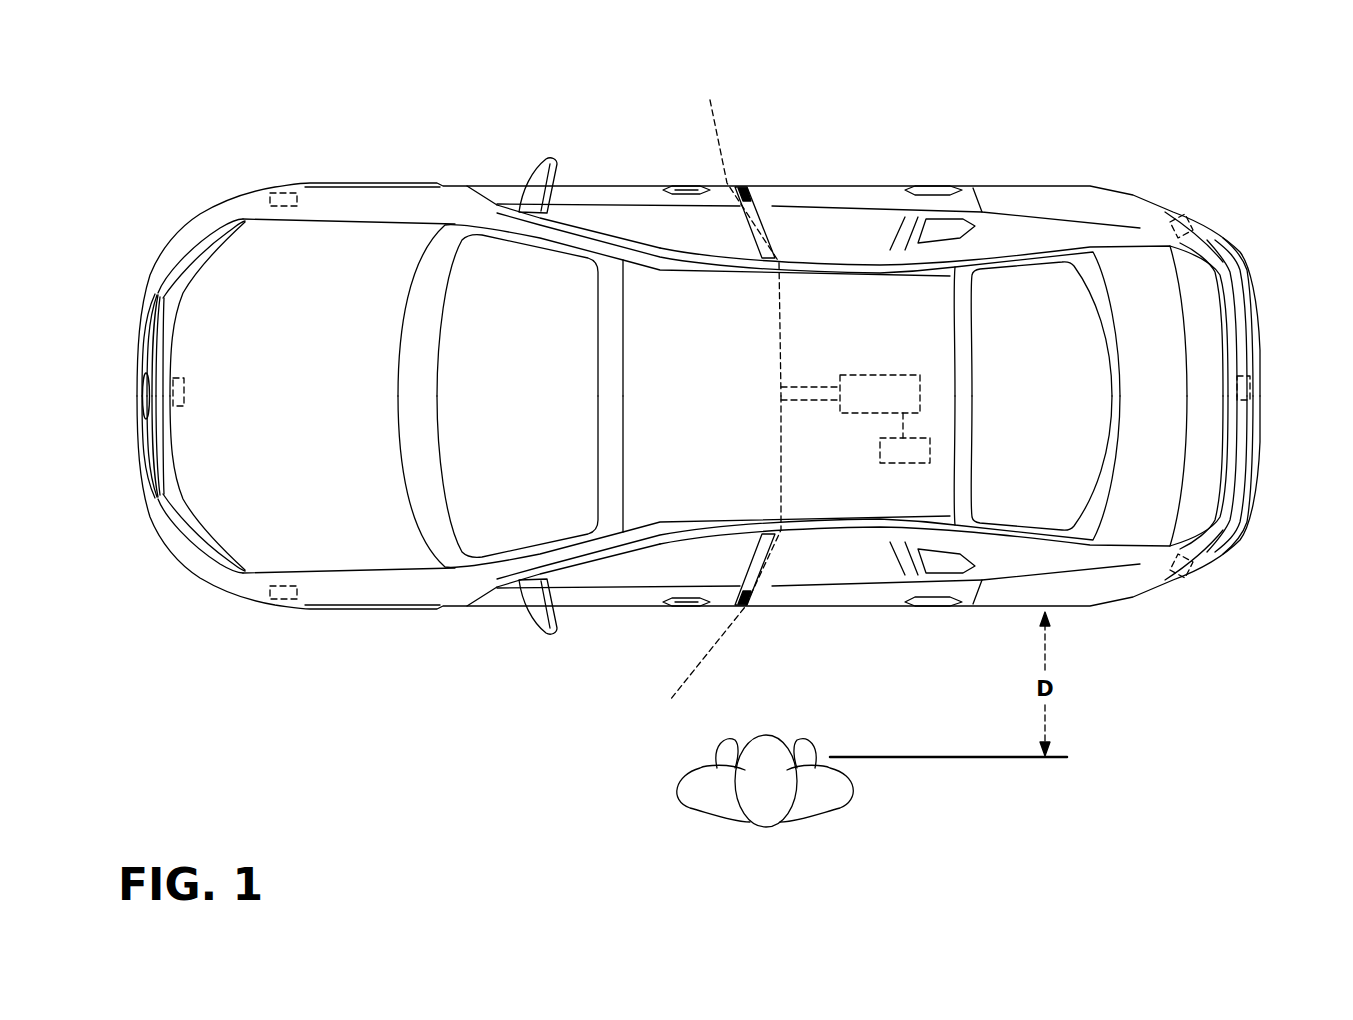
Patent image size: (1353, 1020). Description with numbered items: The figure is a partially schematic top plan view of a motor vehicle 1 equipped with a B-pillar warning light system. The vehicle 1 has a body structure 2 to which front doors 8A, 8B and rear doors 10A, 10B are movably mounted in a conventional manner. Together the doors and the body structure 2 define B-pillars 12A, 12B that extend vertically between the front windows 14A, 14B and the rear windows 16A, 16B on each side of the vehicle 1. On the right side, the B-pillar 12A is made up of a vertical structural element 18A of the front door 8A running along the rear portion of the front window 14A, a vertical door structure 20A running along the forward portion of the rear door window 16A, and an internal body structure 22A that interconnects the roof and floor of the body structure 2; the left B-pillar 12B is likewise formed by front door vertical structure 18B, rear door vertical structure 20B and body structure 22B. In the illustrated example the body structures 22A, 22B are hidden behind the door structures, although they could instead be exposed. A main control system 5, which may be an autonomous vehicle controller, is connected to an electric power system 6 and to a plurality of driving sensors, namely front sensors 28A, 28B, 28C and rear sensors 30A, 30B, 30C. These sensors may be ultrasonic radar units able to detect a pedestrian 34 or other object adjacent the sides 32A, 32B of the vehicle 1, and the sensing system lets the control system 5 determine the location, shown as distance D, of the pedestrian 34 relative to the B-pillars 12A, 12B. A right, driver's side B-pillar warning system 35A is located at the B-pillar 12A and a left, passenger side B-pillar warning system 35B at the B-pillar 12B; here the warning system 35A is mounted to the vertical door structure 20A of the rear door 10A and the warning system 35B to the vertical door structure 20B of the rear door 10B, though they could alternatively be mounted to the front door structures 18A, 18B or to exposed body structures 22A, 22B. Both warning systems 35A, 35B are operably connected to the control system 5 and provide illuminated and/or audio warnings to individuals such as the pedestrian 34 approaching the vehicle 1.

The motor vehicle 1 is at (1134, 190).
The body structure 2 is at (1093, 187).
The main control system 5 is at (868, 375).
The electric power system 6 is at (910, 465).
The front door 8A is at (597, 607).
The front door 8B is at (592, 186).
The rear door 10A is at (858, 607).
The rear door 10B is at (795, 224).
The B-pillar 12A is at (757, 607).
The B-pillar 12B is at (744, 186).
The front window 14A is at (633, 570).
The front window 14B is at (637, 223).
The rear window 16A is at (870, 567).
The rear window 16B is at (880, 190).
The vertical structural element 18A is at (675, 604).
The front door vertical structure 18B is at (675, 188).
The vertical door structure 20A is at (800, 563).
The vertical door structure 20B is at (863, 237).
The internal body structure 22A is at (709, 562).
The vertical body structure 22B is at (732, 231).
The front sensor 28A is at (270, 608).
The front sensor 28B is at (165, 382).
The front sensor 28C is at (278, 190).
The rear sensor 30A is at (1195, 576).
The rear sensor 30B is at (1258, 404).
The rear sensor 30C is at (1195, 216).
The side of vehicle 32A is at (490, 607).
The side of vehicle 32B is at (487, 186).
The pedestrian 34 is at (840, 811).
The B-pillar warning system 35A is at (778, 565).
The B-pillar warning system 35B is at (780, 228).